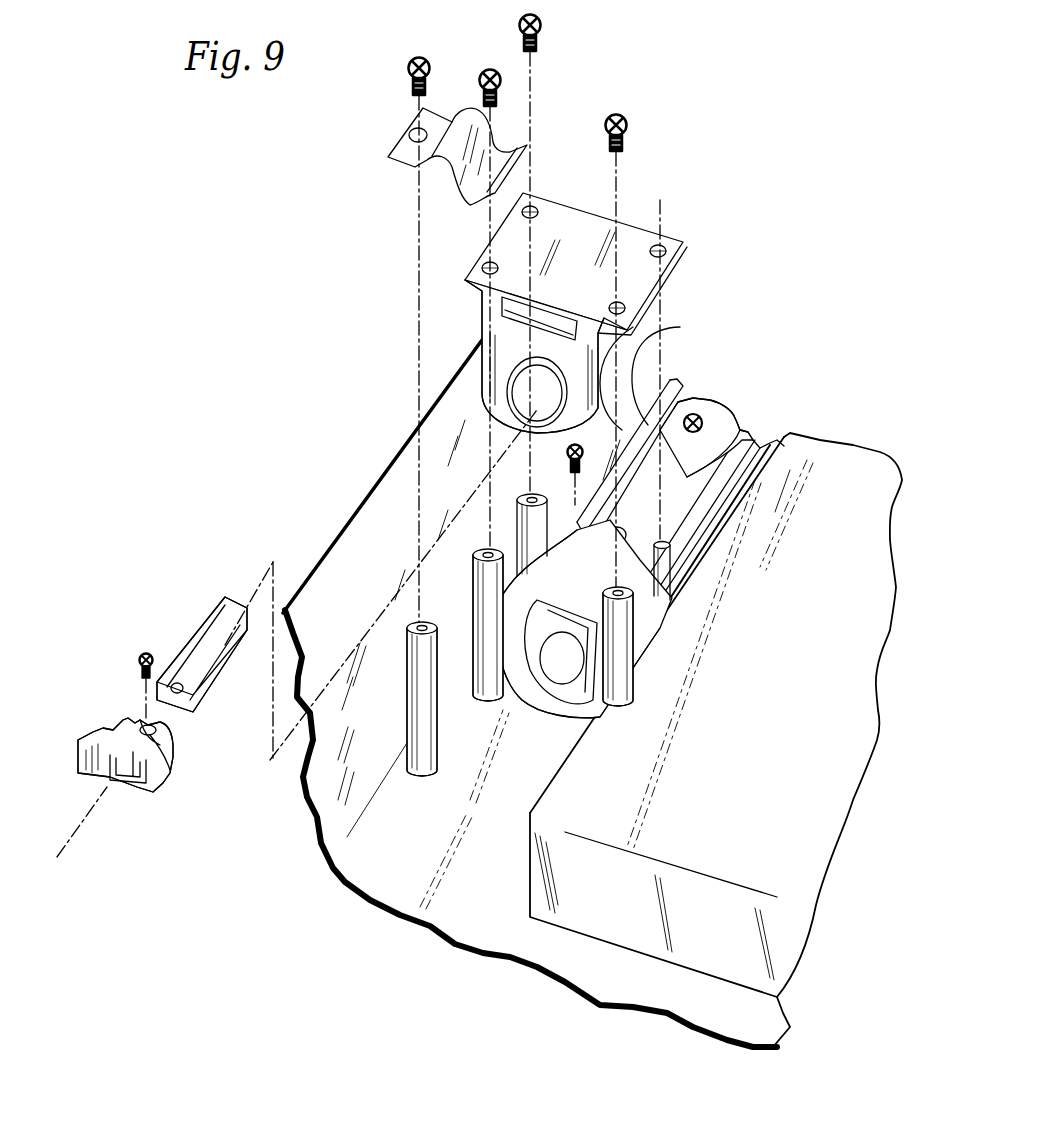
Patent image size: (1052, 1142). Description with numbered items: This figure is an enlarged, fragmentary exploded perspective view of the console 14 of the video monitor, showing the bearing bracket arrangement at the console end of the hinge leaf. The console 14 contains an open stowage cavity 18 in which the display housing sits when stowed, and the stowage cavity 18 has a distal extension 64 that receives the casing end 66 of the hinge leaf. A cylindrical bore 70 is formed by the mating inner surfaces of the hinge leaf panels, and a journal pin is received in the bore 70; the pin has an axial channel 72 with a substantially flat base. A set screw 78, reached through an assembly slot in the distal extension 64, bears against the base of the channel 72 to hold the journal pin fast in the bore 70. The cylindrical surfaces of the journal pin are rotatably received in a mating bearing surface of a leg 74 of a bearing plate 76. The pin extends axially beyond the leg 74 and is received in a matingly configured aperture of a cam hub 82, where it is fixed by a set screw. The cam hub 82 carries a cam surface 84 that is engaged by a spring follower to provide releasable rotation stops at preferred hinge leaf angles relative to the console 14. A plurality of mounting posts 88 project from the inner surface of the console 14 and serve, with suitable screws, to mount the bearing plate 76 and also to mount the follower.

The console 14 is at (443, 945).
The stowage cavity 18 is at (610, 917).
The distal extension 64 is at (603, 570).
The casing end 66 is at (745, 435).
The cylindrical bore 70 is at (567, 680).
The axial channel 72 is at (203, 643).
The leg 74 is at (500, 362).
The bearing plate 76 is at (630, 228).
The set screw 78 is at (680, 327).
The cam hub 82 is at (175, 760).
The cam surface 84 is at (83, 742).
The mounting posts 88 is at (520, 517).